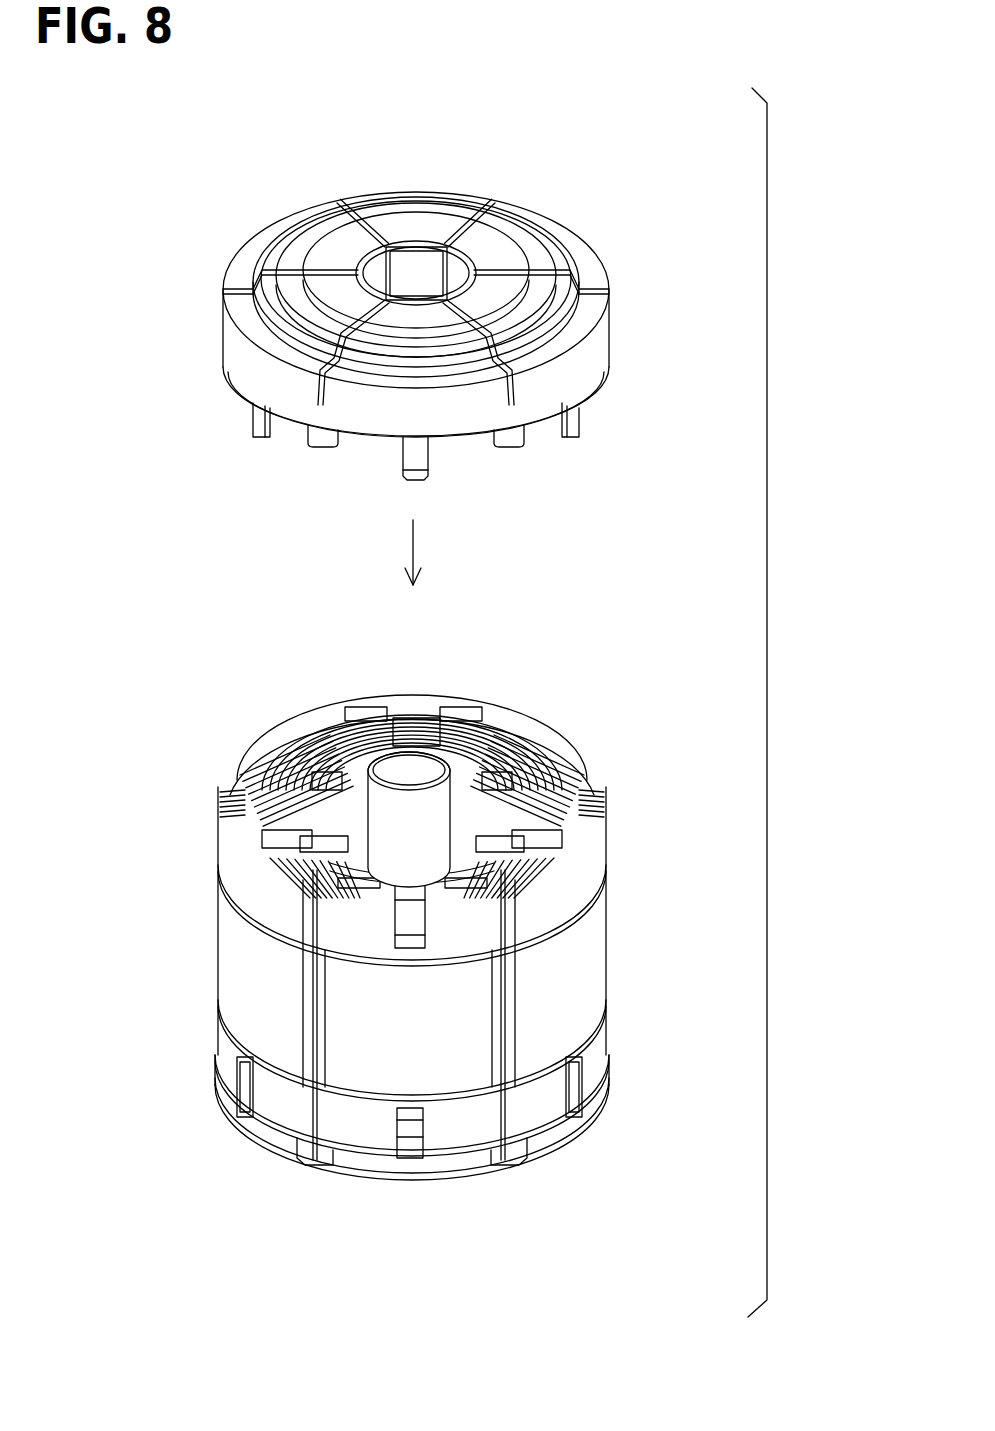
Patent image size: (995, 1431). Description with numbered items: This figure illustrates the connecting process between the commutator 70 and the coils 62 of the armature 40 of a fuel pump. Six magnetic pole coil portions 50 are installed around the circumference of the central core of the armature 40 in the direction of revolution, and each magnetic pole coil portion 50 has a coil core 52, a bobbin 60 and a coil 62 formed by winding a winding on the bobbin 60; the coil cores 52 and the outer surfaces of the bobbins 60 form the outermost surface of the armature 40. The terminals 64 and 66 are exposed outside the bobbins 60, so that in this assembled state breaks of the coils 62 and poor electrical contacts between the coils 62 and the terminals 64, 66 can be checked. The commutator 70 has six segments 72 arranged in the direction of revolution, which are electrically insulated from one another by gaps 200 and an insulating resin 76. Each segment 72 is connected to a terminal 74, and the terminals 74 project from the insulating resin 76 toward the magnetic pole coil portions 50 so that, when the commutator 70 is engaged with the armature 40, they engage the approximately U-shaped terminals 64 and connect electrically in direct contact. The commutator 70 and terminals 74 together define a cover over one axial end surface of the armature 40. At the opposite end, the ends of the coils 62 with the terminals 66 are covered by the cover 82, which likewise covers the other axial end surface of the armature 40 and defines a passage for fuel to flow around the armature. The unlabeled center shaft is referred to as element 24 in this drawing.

The center shaft 24 is at (455, 727).
The armature 40 is at (413, 955).
The magnetic pole coil portion 50 is at (413, 955).
The coil core 52 is at (600, 920).
The bobbin 60 is at (297, 740).
The coil 62 is at (367, 730).
The terminal 64 is at (420, 715).
The terminal 66 is at (237, 1103).
The commutator 70 is at (413, 311).
The segment 72 is at (400, 215).
The terminal 74 is at (260, 418).
The insulating resin 76 is at (570, 375).
The cover 82 is at (478, 1170).
The gap 200 is at (375, 238).